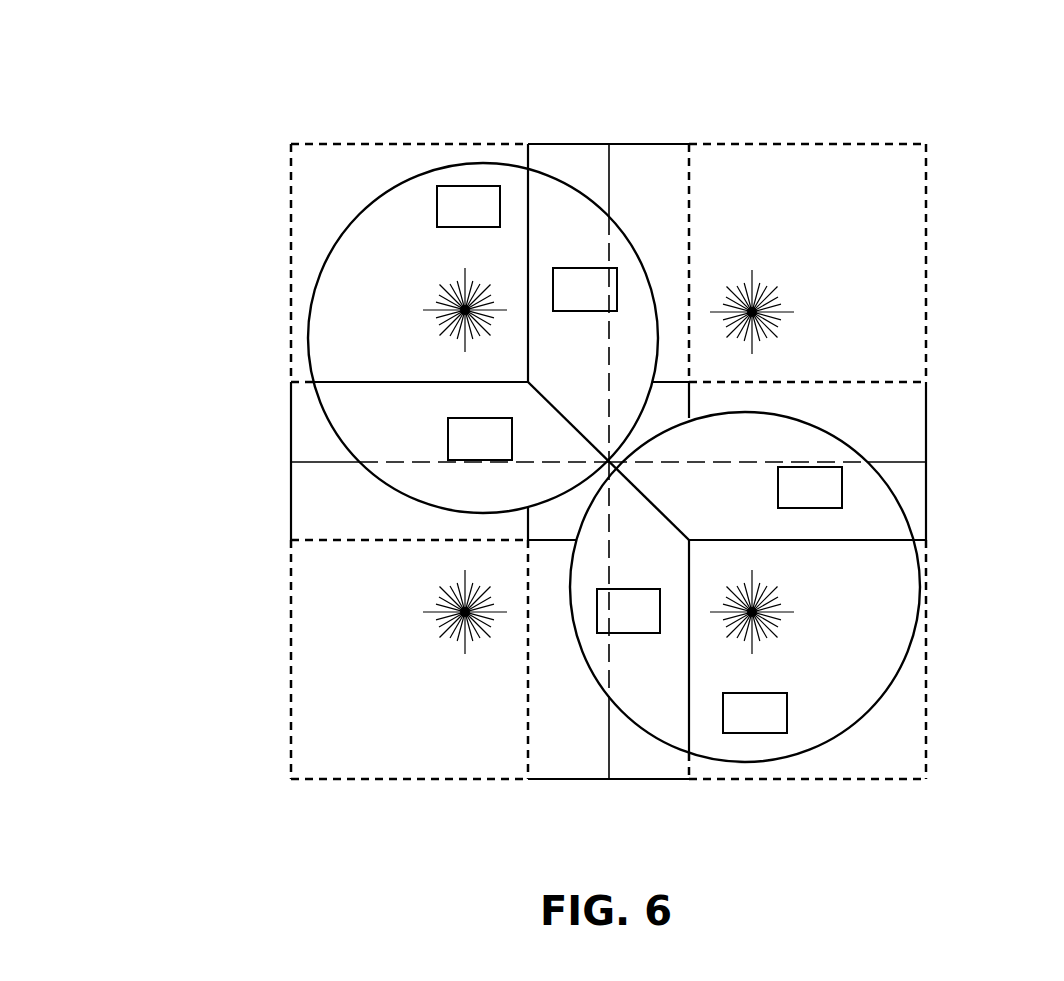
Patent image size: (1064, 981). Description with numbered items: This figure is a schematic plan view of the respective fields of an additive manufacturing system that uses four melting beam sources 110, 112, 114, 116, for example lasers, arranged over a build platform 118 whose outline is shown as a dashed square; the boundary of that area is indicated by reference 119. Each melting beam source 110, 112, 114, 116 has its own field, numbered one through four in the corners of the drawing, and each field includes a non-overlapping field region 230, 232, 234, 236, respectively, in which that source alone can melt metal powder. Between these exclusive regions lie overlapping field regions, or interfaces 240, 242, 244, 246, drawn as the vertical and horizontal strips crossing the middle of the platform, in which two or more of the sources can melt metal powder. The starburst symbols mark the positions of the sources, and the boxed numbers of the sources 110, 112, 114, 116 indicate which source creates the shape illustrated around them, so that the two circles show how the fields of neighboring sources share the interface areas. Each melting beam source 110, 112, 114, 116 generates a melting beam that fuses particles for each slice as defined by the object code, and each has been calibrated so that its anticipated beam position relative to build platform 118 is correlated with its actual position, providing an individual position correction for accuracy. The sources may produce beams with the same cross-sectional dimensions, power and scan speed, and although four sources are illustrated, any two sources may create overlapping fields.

The melting beam source 110 is at (462, 308).
The melting beam source 112 is at (758, 310).
The melting beam source 114 is at (755, 618).
The melting beam source 116 is at (462, 611).
The build platform 118 is at (900, 142).
The boundary of sensing area 119 is at (910, 208).
The non-overlapping field region 230 is at (357, 175).
The non-overlapping field region 232 is at (902, 243).
The non-overlapping field region 234 is at (832, 752).
The non-overlapping field region 236 is at (318, 683).
The overlapping field region 240 is at (650, 106).
The overlapping field region 242 is at (956, 423).
The overlapping field region 244 is at (635, 808).
The overlapping field region 246 is at (256, 512).